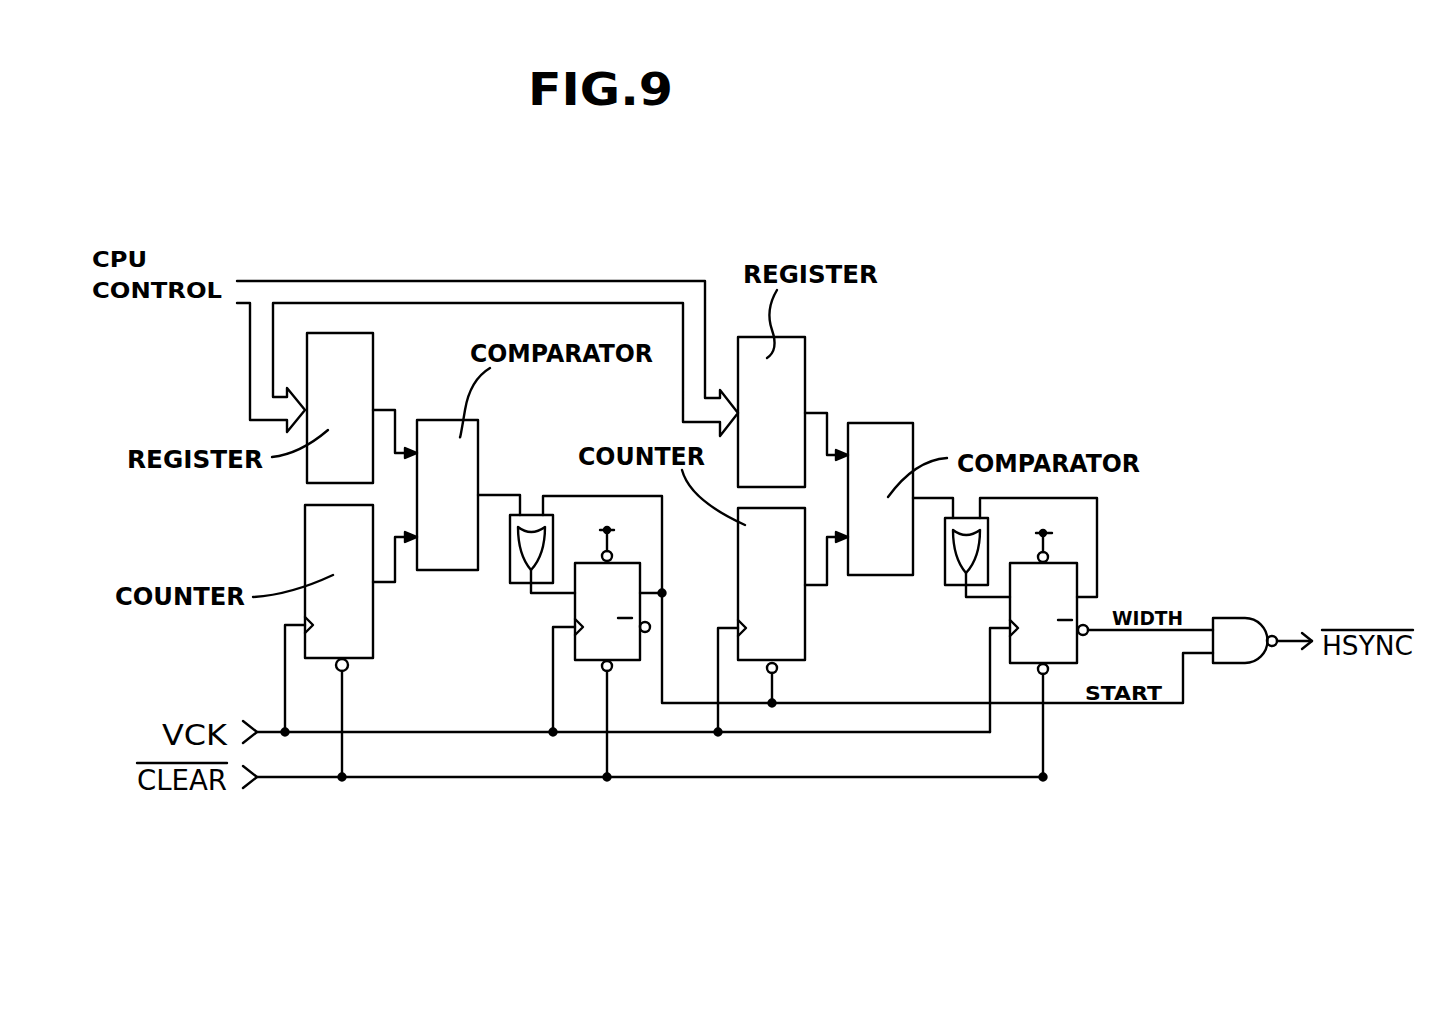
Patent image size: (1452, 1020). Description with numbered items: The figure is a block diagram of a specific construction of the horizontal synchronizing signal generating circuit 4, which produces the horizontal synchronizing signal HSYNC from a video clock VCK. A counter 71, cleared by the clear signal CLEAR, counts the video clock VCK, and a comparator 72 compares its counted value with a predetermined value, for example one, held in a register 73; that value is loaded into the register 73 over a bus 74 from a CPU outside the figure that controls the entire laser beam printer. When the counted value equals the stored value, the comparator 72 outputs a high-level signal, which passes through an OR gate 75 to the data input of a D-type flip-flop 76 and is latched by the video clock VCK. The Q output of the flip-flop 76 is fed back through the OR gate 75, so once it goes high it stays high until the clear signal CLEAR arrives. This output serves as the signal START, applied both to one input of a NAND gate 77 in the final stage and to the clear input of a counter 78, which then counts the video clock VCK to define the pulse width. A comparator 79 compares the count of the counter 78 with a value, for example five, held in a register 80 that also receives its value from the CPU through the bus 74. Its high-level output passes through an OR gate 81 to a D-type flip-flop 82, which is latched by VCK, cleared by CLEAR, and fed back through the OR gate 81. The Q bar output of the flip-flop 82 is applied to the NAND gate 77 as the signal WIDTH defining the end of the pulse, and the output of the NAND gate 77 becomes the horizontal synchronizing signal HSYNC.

The horizontal synchronizing signal generating circuit 4 is at (1088, 354).
The counter 71 is at (305, 555).
The comparator 72 is at (468, 452).
The register 73 is at (368, 365).
The bus 74 is at (393, 293).
The OR gate 75 is at (515, 587).
The D-type flip-flop 76 is at (637, 572).
The NAND gate 77 is at (1237, 657).
The counter 78 is at (797, 627).
The comparator 79 is at (905, 445).
The register 80 is at (798, 368).
The OR gate 81 is at (955, 583).
The D-type flip-flop 82 is at (1072, 570).